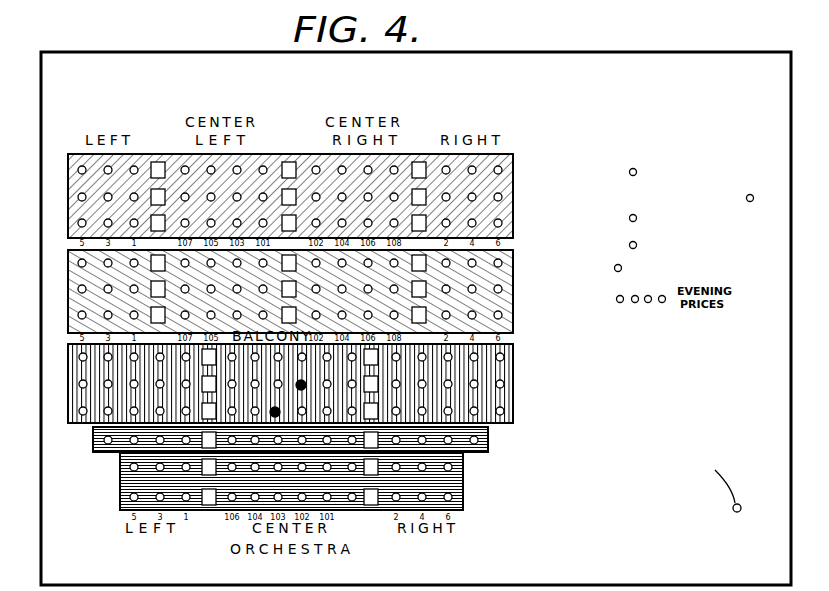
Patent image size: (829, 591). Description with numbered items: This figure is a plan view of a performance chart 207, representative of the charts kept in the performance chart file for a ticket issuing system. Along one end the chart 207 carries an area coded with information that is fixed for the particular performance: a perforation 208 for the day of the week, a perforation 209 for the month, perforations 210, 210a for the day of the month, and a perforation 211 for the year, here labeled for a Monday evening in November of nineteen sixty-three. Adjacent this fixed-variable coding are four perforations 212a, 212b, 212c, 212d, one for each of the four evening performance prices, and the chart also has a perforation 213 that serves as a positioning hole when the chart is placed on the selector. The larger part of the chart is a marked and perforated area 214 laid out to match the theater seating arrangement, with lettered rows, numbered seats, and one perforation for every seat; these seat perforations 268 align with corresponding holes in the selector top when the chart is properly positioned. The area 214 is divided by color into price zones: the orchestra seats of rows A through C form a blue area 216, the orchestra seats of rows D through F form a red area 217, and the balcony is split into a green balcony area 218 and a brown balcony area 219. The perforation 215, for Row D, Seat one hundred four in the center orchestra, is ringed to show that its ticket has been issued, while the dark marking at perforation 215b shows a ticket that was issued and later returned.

The performance chart 207 is at (636, 44).
The perforation for the day of the week 208 is at (636, 167).
The perforation for the month 209 is at (748, 204).
The perforation for the day of the month 210 is at (628, 218).
The perforation for the day of the month 210a is at (628, 245).
The perforation for the year 211 is at (613, 268).
The evening price perforation 212a is at (616, 299).
The evening price perforation 212b is at (634, 303).
The evening price perforation 212c is at (648, 303).
The evening price perforation 212d is at (665, 302).
The positioning hole 213 is at (733, 508).
The marked and perforated area 214 is at (510, 445).
The perforation for Row D, Seat 104 215 is at (273, 416).
The marked perforation 215b is at (303, 389).
The orchestra rows A–C area 216 is at (462, 477).
The orchestra rows D–F area 217 is at (512, 385).
The balcony area 218 is at (507, 297).
The balcony area 219 is at (511, 185).
The perforations 268 is at (97, 450).